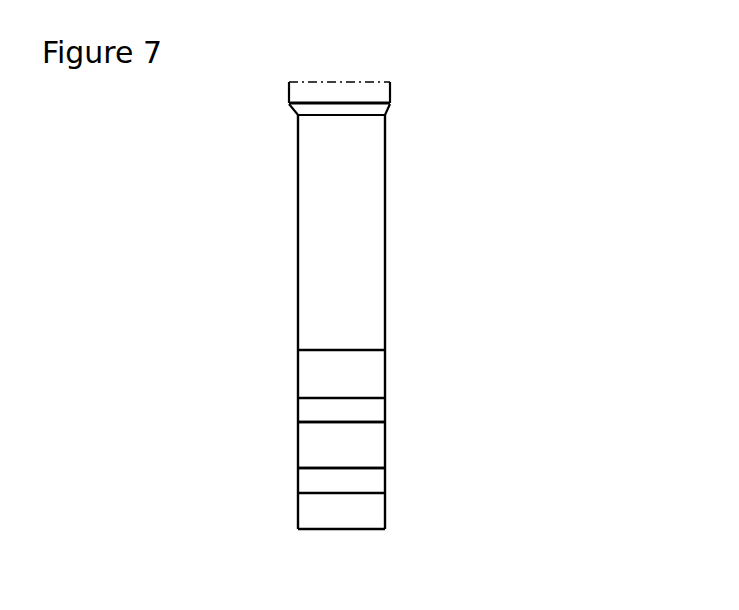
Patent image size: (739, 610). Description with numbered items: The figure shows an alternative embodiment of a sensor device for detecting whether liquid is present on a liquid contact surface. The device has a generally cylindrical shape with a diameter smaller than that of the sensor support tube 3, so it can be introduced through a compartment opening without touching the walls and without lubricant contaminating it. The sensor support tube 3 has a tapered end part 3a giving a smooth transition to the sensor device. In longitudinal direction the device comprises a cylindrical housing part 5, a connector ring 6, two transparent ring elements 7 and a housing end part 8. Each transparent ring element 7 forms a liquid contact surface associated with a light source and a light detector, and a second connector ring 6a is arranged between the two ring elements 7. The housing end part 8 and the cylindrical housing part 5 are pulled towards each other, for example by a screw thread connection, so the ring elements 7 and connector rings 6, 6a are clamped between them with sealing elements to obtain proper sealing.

The sensor support tube 3 is at (372, 87).
The tapered end part 3a is at (362, 109).
The cylindrical housing part 5 is at (356, 218).
The connector ring 6 is at (367, 385).
The transparent ring element 7 is at (367, 410).
The second connector ring 6a is at (367, 445).
The housing end part 8 is at (377, 503).